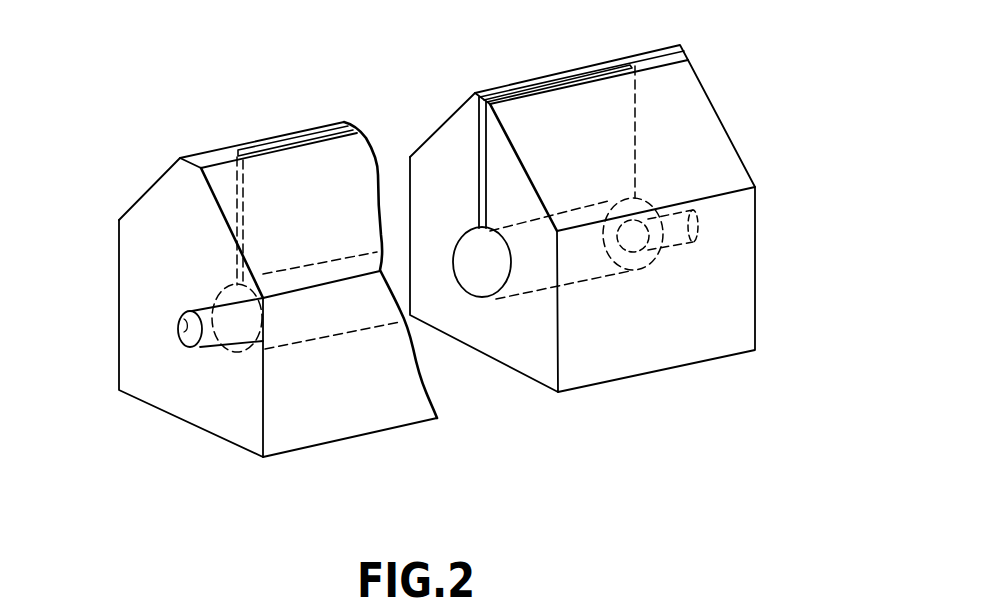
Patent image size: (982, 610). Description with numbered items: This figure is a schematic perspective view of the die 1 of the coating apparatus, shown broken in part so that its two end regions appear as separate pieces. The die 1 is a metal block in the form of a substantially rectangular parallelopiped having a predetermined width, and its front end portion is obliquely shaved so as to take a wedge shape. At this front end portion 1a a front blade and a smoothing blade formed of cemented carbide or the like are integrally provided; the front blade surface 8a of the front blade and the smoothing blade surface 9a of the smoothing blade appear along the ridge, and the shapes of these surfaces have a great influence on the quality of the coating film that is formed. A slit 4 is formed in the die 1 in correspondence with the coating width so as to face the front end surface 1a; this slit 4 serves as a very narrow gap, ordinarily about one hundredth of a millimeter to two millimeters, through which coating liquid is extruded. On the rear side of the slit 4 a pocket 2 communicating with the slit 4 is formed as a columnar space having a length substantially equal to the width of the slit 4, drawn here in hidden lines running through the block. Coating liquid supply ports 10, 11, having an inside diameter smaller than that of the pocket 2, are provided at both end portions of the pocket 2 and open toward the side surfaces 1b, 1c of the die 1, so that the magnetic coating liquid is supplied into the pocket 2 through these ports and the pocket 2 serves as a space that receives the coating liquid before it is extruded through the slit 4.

The die 1 is at (748, 128).
The front end portion 1a is at (677, 48).
The side surface 1b is at (168, 397).
The side surface 1c is at (755, 313).
The pocket 2 is at (494, 296).
The slit 4 is at (293, 140).
The front blade surface 8a is at (593, 72).
The smoothing blade surface 9a is at (525, 82).
The coating liquid supply port 10 is at (177, 333).
The coating liquid supply port 11 is at (697, 228).